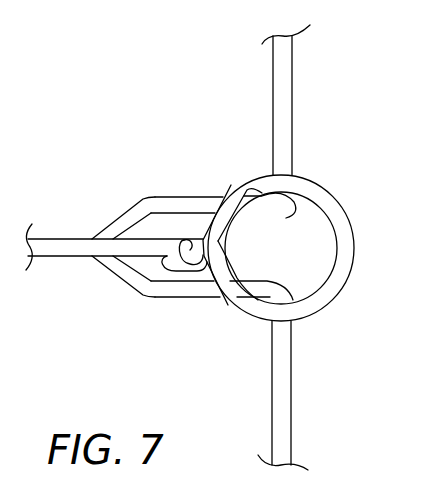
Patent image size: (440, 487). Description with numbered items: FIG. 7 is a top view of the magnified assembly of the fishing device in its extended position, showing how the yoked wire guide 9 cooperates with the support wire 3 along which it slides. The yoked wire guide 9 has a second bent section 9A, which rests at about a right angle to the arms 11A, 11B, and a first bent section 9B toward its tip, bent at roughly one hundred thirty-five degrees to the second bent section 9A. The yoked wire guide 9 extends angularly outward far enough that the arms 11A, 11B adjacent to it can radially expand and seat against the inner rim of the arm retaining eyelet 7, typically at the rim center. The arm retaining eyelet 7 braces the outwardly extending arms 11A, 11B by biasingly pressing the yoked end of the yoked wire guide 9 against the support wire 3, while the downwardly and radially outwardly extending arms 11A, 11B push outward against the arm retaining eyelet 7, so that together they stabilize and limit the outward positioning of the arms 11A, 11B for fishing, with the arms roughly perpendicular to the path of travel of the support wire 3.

The support wire 3 is at (46, 250).
The arm retaining eyelet 7 is at (322, 193).
The yoked wire guide 9 is at (158, 247).
The second bent section 9A is at (173, 200).
The first bent section 9B is at (127, 215).
The arm 11A is at (282, 400).
The arm 11B is at (287, 118).